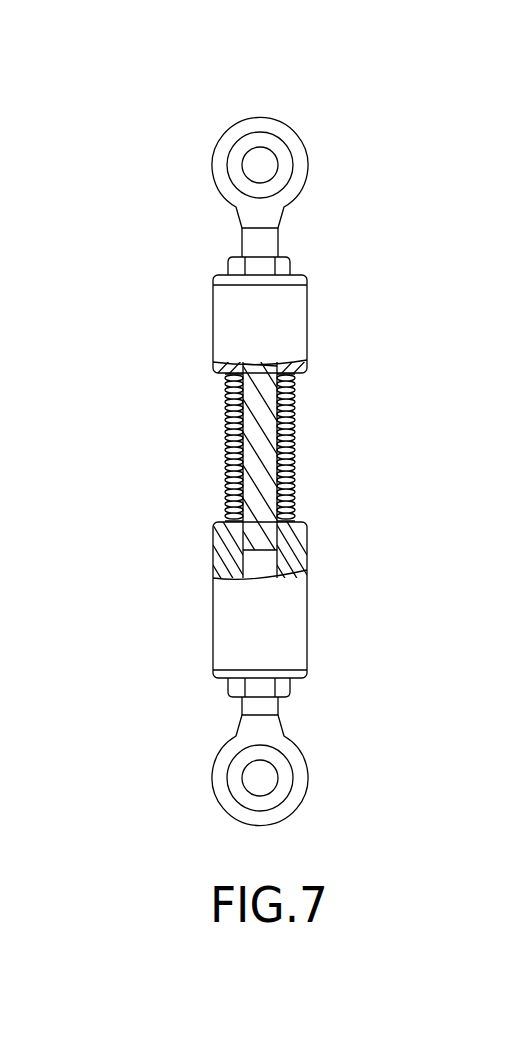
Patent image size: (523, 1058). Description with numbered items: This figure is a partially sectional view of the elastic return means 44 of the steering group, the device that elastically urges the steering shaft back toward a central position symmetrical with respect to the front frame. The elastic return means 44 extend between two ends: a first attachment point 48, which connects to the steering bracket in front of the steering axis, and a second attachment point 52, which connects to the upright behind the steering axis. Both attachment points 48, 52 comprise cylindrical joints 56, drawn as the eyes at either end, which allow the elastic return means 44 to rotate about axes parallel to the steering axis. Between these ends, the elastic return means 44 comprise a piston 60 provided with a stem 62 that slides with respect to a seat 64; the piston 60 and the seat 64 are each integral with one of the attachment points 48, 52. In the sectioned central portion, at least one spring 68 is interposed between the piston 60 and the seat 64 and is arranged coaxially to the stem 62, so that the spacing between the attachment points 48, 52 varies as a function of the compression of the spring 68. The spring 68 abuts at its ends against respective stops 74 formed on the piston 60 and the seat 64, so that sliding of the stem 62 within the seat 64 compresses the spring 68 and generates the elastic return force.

The elastic return means 44 is at (153, 165).
The first attachment point 48 is at (328, 162).
The second attachment point 52 is at (318, 792).
The cylindrical joints 56 is at (346, 457).
The piston 60 is at (278, 323).
The stem 62 is at (262, 428).
The seat 64 is at (262, 562).
The spring 68 is at (296, 485).
The stops 74 is at (217, 377).